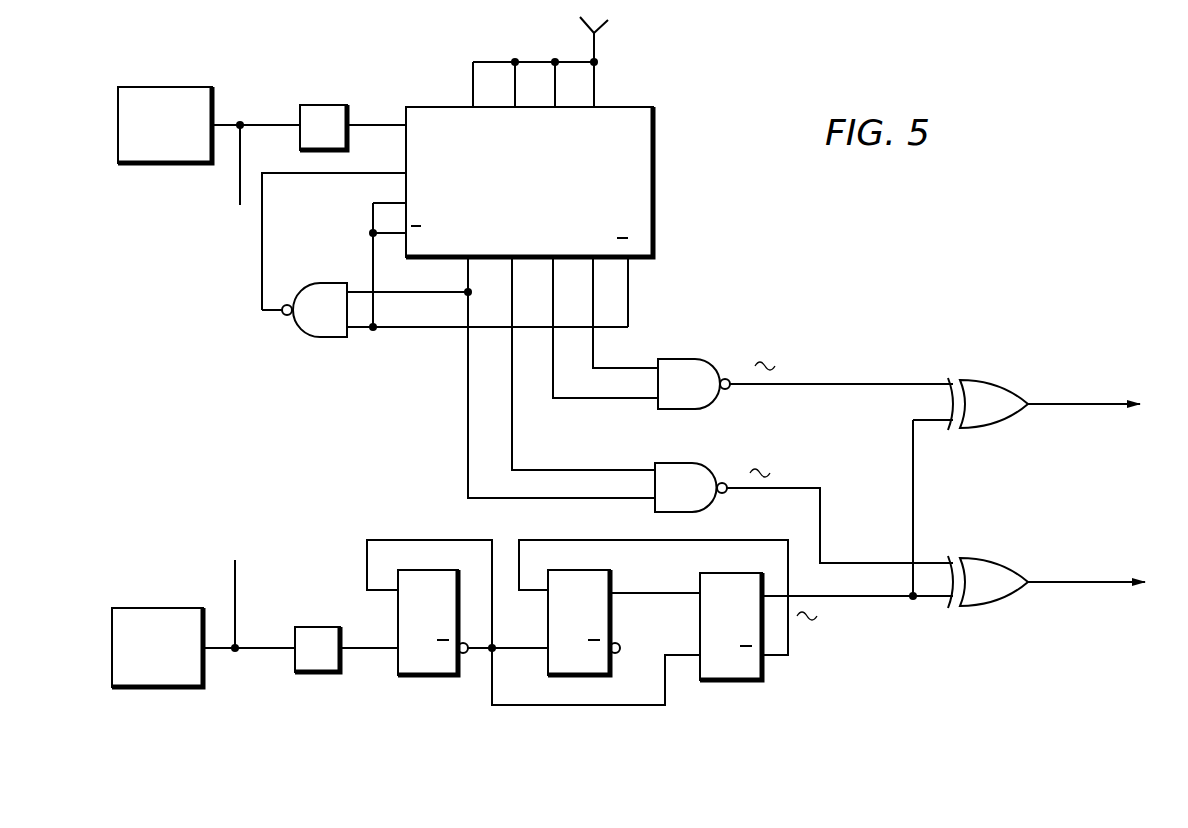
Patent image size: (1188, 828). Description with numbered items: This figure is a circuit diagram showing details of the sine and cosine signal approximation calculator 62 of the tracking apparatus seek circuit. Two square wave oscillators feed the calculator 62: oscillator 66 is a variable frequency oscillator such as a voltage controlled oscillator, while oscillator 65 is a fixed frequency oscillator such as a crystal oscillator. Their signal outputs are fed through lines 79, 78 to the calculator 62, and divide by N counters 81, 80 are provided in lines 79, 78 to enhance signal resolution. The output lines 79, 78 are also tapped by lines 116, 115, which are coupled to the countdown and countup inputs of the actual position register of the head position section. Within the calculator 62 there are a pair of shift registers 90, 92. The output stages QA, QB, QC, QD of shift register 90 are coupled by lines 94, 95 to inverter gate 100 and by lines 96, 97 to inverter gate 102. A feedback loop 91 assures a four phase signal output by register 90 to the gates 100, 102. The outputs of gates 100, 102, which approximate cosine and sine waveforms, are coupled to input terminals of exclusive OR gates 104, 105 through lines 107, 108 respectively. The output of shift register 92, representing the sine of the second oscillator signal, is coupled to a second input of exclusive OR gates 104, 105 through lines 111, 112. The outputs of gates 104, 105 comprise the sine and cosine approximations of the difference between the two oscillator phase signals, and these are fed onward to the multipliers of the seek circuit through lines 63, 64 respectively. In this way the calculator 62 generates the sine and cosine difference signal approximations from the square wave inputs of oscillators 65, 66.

The square wave oscillator 66 is at (196, 78).
The line 79 is at (251, 123).
The line 116 is at (238, 175).
The divide by N counter 81 is at (337, 105).
The shift register 90 is at (653, 107).
The feedback loop 91 is at (397, 347).
The line 97 is at (593, 303).
The line 94 is at (468, 394).
The line 95 is at (512, 446).
The line 96 is at (583, 398).
The inverter gate 102 is at (707, 359).
The inverter gate 100 is at (688, 463).
The line 108 is at (890, 384).
The line 107 is at (820, 525).
The line 112 is at (914, 486).
The exclusive OR gate 105 is at (1008, 362).
The line 64 is at (1082, 407).
The exclusive OR gate 104 is at (992, 557).
The line 63 is at (1052, 585).
The line 111 is at (898, 600).
The calculator 62 is at (793, 315).
The square wave oscillator 65 is at (185, 608).
The line 78 is at (218, 650).
The line 115 is at (240, 587).
The divide by N counter 80 is at (340, 626).
The shift register 92 is at (792, 676).